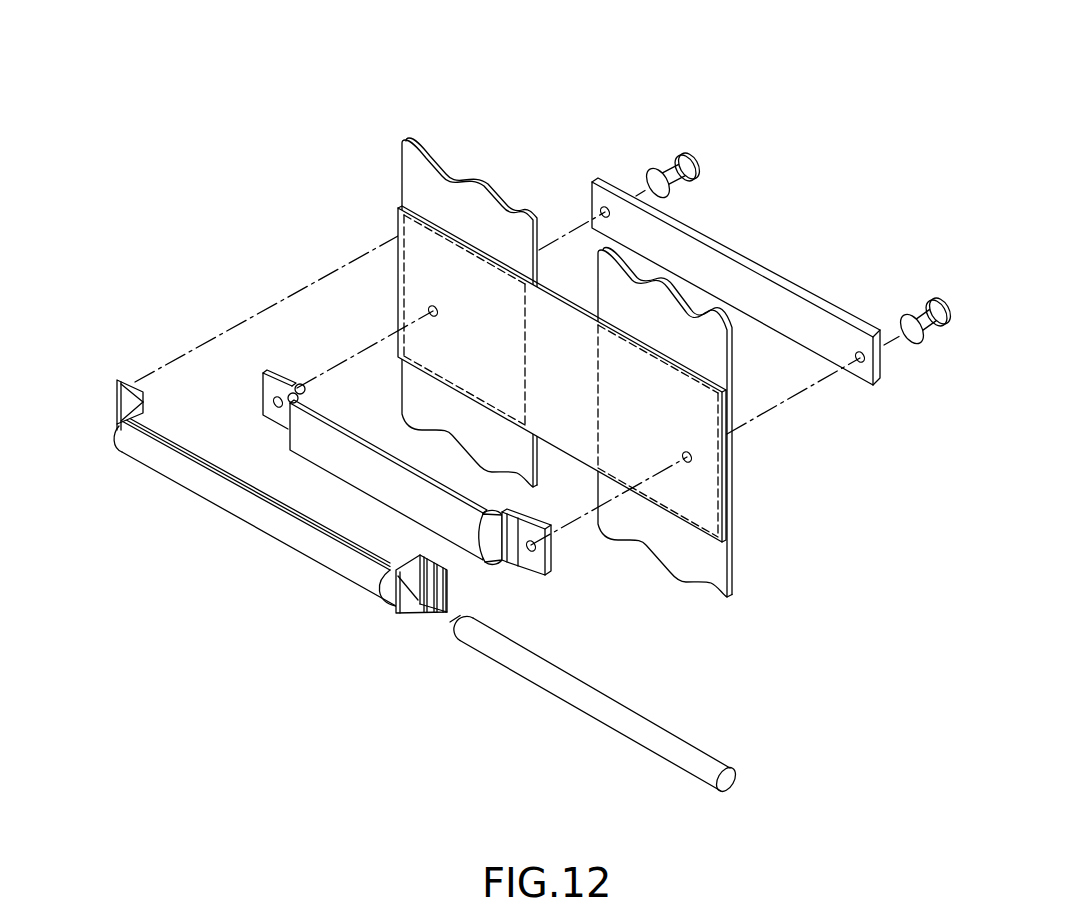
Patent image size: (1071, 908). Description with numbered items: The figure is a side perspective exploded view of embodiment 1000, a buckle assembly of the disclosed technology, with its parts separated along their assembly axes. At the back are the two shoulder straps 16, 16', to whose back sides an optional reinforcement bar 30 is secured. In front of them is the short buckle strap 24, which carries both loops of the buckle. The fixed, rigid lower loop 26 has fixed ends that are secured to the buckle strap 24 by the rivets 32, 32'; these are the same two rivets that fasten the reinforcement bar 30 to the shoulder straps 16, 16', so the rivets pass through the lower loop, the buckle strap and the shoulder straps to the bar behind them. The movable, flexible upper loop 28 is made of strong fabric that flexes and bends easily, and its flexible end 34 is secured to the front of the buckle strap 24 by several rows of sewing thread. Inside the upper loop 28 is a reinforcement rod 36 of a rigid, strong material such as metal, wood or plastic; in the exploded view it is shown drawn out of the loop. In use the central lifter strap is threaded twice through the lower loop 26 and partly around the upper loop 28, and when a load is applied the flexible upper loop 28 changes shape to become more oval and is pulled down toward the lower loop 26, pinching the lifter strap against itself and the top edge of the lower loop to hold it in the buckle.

The embodiment 1000 is at (524, 90).
The shoulder strap 16 is at (479, 312).
The shoulder strap 16' is at (722, 423).
The short buckle strap 24 is at (692, 497).
The lower loop 26 is at (467, 535).
The upper loop 28 is at (278, 525).
The reinforcement bar 30 is at (677, 243).
The rivet 32 is at (669, 142).
The rivet 32' is at (911, 280).
The flexible end 34 is at (113, 398).
The reinforcement rod 36 is at (578, 687).